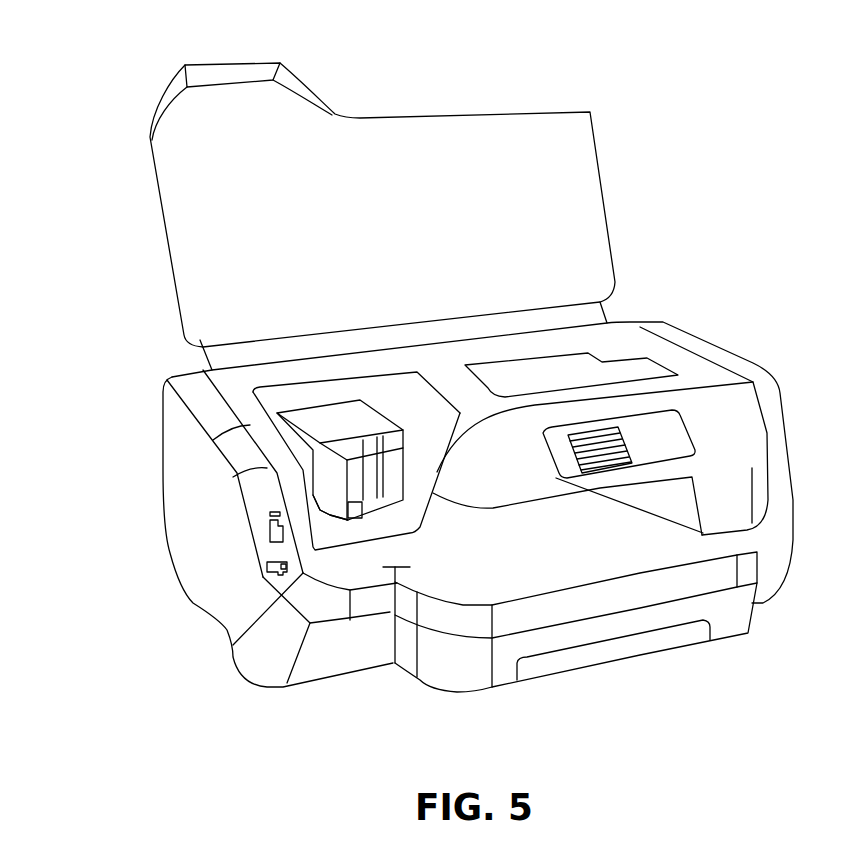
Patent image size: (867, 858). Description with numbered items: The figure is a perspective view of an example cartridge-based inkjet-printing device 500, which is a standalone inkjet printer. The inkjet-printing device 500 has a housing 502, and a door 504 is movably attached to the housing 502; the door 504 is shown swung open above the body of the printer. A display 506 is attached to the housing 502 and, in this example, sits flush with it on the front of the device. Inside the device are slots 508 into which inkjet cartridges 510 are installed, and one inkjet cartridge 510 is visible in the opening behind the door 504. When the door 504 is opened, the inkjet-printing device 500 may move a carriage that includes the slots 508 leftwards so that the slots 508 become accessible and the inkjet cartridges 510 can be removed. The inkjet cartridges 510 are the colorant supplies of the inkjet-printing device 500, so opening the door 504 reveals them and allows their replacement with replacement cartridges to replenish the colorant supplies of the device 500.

The cartridge-based inkjet-printing device 500 is at (432, 385).
The housing 502 is at (173, 497).
The door 504 is at (590, 160).
The display 506 is at (688, 431).
The slots 508 is at (330, 520).
The inkjet cartridges 510 is at (333, 410).